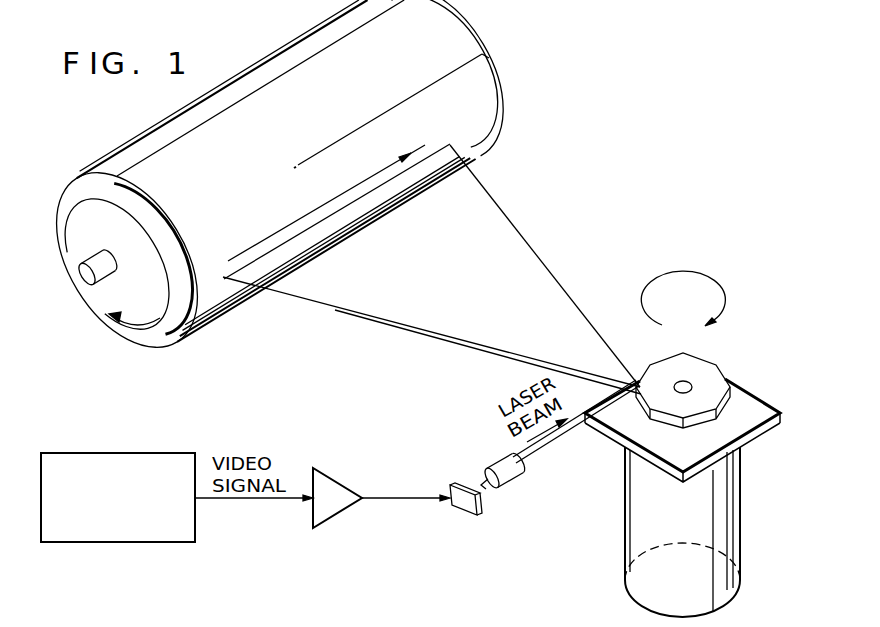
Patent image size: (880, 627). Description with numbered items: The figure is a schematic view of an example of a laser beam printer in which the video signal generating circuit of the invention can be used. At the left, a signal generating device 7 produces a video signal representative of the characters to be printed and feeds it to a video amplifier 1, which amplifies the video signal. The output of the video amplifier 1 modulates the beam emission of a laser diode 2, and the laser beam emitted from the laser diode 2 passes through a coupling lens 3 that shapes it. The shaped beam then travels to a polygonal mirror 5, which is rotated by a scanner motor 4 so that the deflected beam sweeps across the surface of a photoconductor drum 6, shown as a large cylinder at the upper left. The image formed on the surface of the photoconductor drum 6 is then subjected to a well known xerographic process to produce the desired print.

The video amplifier 1 is at (337, 482).
The laser diode 2 is at (452, 489).
The coupling lens 3 is at (492, 471).
The scanner motor 4 is at (630, 518).
The polygonal mirror 5 is at (716, 381).
The photoconductor drum 6 is at (212, 318).
The signal generating device 7 is at (164, 453).